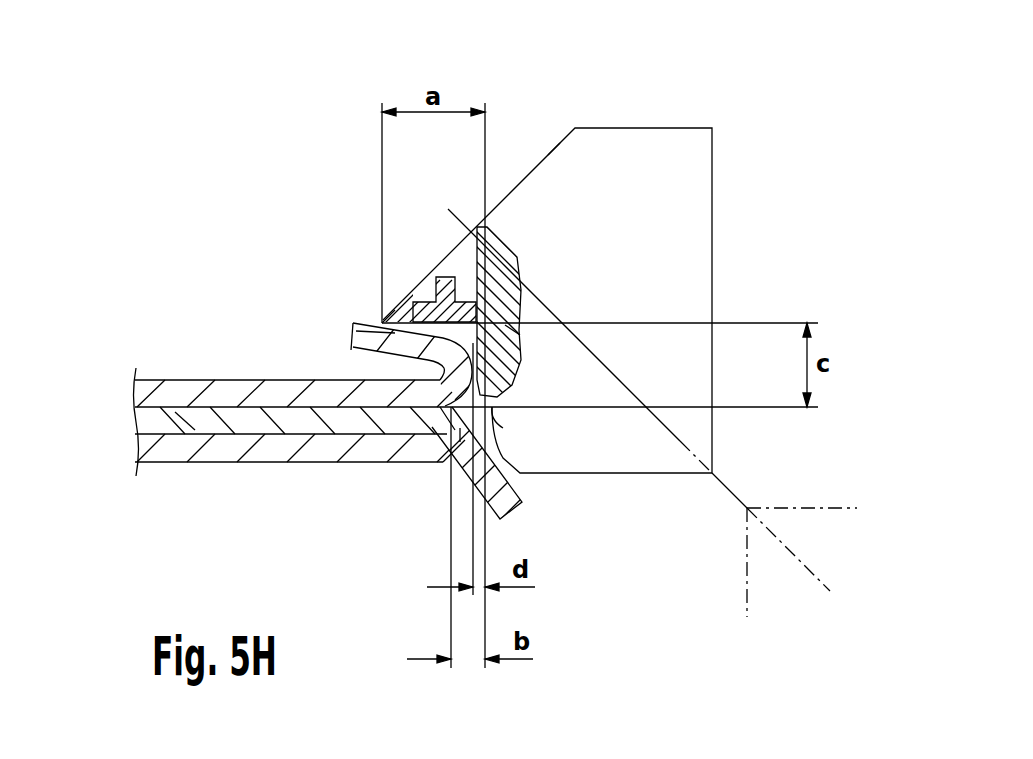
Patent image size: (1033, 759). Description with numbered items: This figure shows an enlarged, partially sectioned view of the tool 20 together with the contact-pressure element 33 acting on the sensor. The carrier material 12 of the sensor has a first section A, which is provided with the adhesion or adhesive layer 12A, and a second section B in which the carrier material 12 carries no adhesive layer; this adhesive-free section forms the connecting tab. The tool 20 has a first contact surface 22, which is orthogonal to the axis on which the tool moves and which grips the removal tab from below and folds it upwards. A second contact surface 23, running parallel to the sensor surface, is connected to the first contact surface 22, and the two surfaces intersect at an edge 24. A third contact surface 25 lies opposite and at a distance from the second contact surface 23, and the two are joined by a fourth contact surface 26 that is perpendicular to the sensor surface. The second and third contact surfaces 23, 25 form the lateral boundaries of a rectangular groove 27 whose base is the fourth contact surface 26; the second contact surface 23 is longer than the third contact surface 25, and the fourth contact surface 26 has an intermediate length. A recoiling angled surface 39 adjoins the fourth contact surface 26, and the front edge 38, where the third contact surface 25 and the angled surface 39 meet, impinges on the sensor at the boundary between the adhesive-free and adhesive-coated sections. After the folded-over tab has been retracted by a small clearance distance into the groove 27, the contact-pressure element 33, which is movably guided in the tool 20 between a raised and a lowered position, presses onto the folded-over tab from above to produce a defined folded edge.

The carrier material 12 is at (122, 436).
The adhesion or adhesive layer 12A is at (183, 418).
The first section A is at (229, 403).
The second section B is at (443, 465).
The tool 20 is at (622, 112).
The first contact surface 22 is at (552, 151).
The second contact surface 23 is at (353, 326).
The edge 24 is at (382, 322).
The third contact surface 25 is at (490, 402).
The fourth contact surface 26 is at (500, 358).
The rectangular groove 27 is at (513, 330).
The contact-pressure element 33 is at (445, 277).
The front edge 38 is at (435, 412).
The recoiling angled surface 39 is at (523, 503).